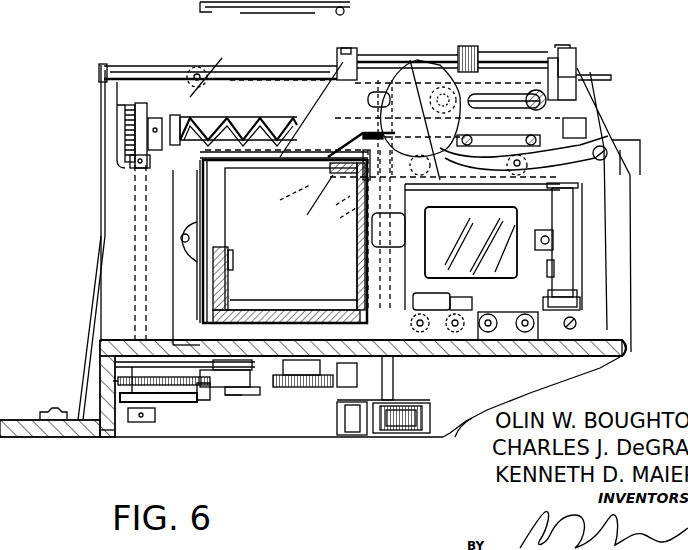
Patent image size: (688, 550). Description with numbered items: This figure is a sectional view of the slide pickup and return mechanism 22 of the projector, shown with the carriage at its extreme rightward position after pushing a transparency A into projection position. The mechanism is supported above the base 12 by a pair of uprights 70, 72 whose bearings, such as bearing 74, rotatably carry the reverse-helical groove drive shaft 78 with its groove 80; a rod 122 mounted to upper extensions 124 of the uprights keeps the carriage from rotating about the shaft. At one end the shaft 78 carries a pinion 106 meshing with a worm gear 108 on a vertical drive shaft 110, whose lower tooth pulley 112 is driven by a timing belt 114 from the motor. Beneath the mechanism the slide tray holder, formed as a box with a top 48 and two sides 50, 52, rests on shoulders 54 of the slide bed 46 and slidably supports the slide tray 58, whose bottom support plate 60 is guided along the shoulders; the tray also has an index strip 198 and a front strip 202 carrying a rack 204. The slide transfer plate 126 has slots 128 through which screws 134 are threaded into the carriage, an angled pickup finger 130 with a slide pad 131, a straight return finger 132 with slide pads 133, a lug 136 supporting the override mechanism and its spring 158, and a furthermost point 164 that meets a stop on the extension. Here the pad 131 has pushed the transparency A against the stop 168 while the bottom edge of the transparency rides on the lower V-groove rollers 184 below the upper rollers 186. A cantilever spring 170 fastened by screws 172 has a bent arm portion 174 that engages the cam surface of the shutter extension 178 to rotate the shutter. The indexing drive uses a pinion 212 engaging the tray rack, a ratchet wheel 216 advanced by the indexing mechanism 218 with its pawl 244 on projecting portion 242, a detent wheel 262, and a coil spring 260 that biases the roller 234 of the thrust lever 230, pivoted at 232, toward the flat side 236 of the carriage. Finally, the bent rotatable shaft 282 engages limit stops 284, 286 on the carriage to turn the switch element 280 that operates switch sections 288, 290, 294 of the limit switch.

The base 12 is at (221, 401).
The slide pickup and return mechanism 22 is at (363, 223).
The slide bed 46 is at (153, 331).
The top 48 is at (285, 151).
The side 50 is at (191, 245).
The side 52 is at (285, 241).
The shoulders 54 is at (362, 375).
The slide tray 58 is at (242, 278).
The bottom support plate 60 is at (293, 289).
The upright 70 is at (78, 245).
The upright 72 is at (626, 246).
The bearing 74 is at (163, 119).
The reverse-helical groove drive shaft 78 is at (238, 121).
The groove 80 is at (217, 113).
The pinion 106 is at (147, 125).
The worm gear 108 is at (144, 113).
The drive shaft 110 is at (98, 255).
The tooth pulley 112 is at (113, 448).
The timing belt 114 is at (155, 434).
The rod 122 is at (218, 59).
The upper extensions 124 is at (356, 203).
The slide transfer plate 126 is at (413, 103).
The slots 128 is at (443, 95).
The pickup finger 130 is at (296, 139).
The slide pad 131 is at (358, 230).
The return finger 132 is at (586, 246).
The slide pads 133 is at (588, 269).
The screws 134 is at (504, 113).
The lug 136 is at (377, 61).
The spring 158 is at (502, 44).
The furthermost point 164 is at (284, 171).
The stop 168 is at (582, 228).
The cantilever spring 170 is at (620, 122).
The screws 172 is at (475, 149).
The bent arm portion 174 is at (560, 148).
The protruding extension 178 is at (507, 146).
The V-groove rollers 184 is at (493, 310).
The V-groove rollers 186 is at (482, 247).
The index strip 198 is at (305, 204).
The strip 202 is at (168, 241).
The rack 204 is at (168, 241).
The indexing and advancing pinion 212 is at (367, 383).
The ratchet wheel 216 is at (303, 390).
The indexing mechanism 218 is at (231, 417).
The thrust lever 230 is at (145, 257).
The pivot 232 is at (152, 235).
The roller 234 is at (224, 69).
The flat side 236 is at (445, 102).
The projecting portion 242 is at (244, 390).
The pawl 244 is at (246, 423).
The coil spring 260 is at (184, 394).
The detent wheel 262 is at (286, 302).
The switch element 280 is at (396, 435).
The rotatable shaft 282 is at (394, 378).
The limit stop 284 is at (590, 67).
The limit stop 286 is at (419, 61).
The switch section 288 is at (337, 434).
The switch section 290 is at (359, 444).
The switch section 294 is at (476, 409).
The transparency A is at (462, 242).